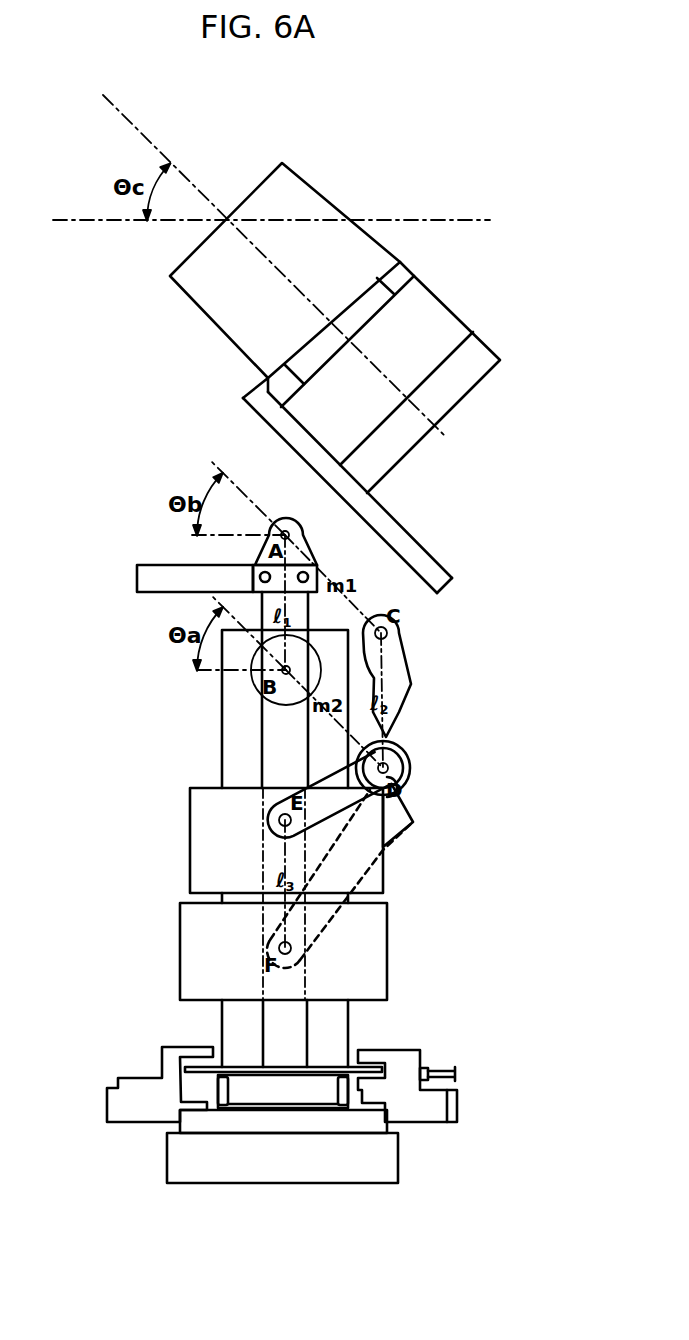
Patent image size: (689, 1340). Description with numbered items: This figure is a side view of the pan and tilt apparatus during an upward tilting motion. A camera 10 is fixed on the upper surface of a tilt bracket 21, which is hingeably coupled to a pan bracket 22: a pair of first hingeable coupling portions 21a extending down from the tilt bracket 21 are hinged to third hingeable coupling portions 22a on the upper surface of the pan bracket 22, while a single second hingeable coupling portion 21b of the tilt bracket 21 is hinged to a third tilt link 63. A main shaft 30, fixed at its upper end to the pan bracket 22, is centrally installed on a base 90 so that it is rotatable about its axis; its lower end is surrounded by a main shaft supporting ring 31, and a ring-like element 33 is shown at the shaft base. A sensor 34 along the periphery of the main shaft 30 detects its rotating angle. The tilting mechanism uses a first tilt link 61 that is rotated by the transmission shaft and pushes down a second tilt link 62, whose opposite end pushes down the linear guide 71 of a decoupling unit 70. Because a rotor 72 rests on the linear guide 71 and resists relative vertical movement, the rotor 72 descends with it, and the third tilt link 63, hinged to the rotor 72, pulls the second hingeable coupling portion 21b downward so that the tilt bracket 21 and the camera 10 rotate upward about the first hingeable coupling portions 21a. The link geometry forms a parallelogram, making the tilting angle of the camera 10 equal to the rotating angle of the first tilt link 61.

The camera 10 is at (207, 308).
The tilt bracket 21 is at (253, 386).
The first hingeable coupling portions 21a is at (328, 523).
The second hingeable coupling portion 21b is at (440, 600).
The pan bracket 22 is at (147, 580).
The third hingeable coupling portions 22a is at (308, 546).
The main shaft 30 is at (270, 747).
The main shaft supporting ring 31 is at (373, 1125).
The rotary stage / bearing 33 is at (305, 1097).
The sensor 34 is at (410, 1057).
The first tilt link 61 is at (410, 765).
The second tilt link 62 is at (407, 842).
The third tilt link 63 is at (412, 683).
The decoupling unit 70 is at (136, 896).
The linear guide 71 is at (185, 958).
The rotor 72 is at (195, 846).
The base 90 is at (190, 1165).